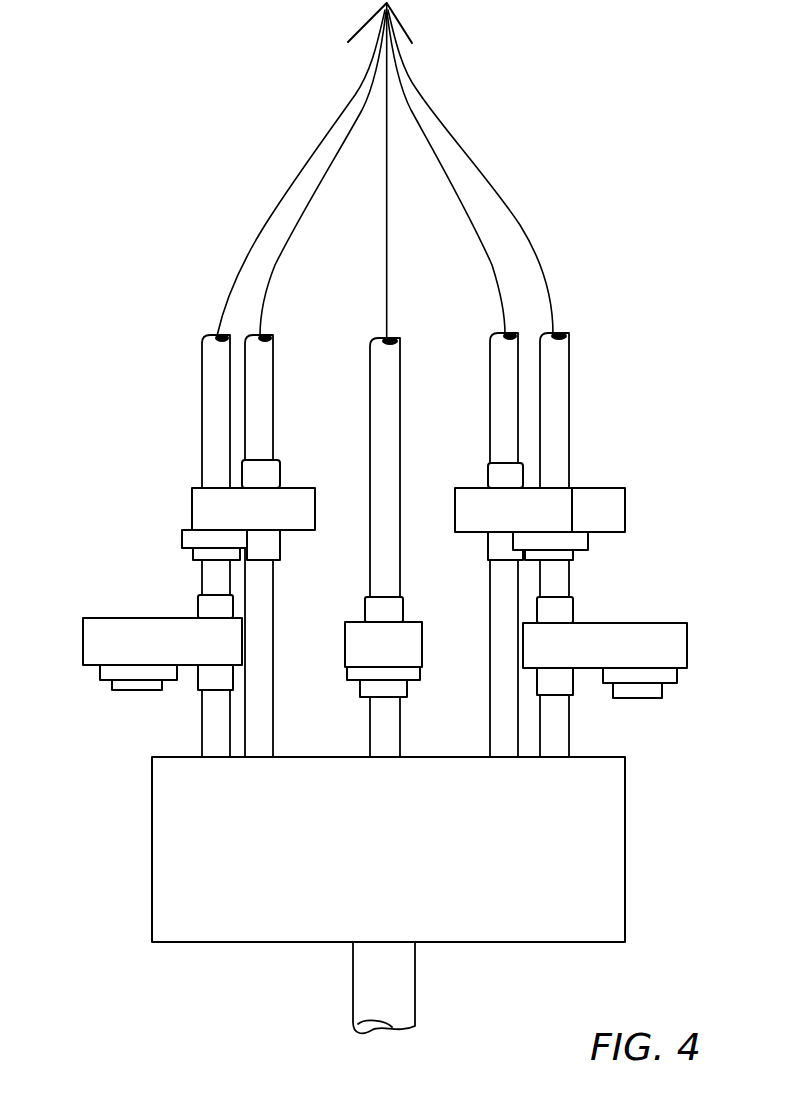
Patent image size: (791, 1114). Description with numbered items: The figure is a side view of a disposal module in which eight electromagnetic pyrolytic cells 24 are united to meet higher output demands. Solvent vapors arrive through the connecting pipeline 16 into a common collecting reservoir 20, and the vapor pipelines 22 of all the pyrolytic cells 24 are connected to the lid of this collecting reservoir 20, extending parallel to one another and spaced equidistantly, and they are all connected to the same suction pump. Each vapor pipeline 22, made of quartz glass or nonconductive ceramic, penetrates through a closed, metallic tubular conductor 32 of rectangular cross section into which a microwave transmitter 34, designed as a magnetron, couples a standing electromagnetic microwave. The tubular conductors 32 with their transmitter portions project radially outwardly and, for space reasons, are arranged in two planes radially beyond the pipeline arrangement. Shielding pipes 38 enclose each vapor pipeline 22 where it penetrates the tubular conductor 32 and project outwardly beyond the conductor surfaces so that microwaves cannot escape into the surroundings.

The connecting pipeline 16 is at (403, 977).
The collecting reservoir 20 is at (258, 920).
The vapor pipeline 22 is at (553, 373).
The electromagnetic pyrolytic cell 24 is at (689, 650).
The tubular conductor 32 is at (180, 642).
The microwave transmitter 34 is at (133, 684).
The shielding pipe 38 is at (267, 547).